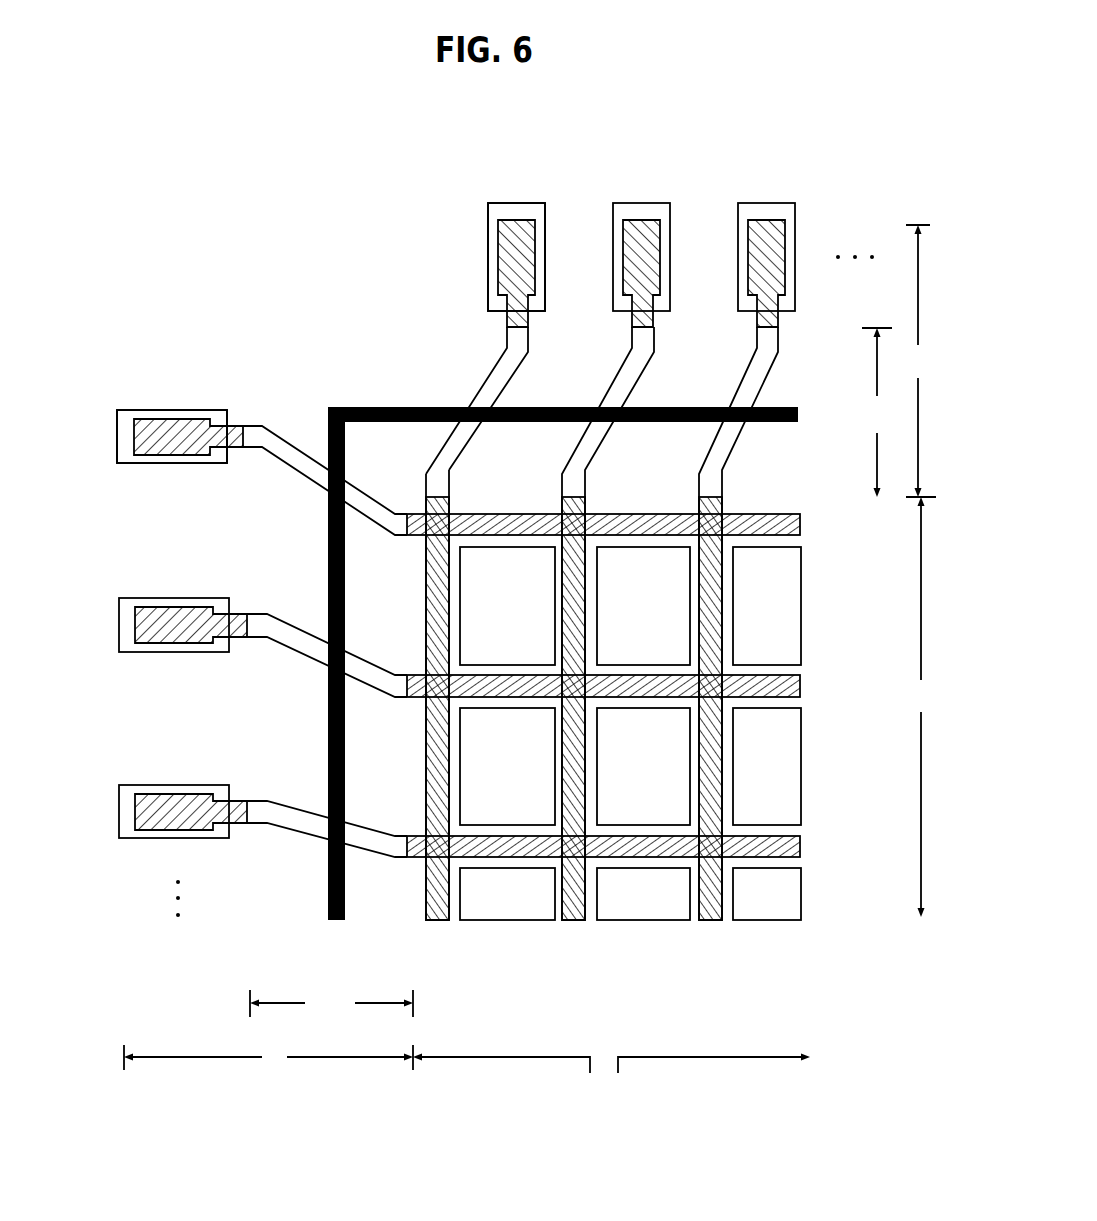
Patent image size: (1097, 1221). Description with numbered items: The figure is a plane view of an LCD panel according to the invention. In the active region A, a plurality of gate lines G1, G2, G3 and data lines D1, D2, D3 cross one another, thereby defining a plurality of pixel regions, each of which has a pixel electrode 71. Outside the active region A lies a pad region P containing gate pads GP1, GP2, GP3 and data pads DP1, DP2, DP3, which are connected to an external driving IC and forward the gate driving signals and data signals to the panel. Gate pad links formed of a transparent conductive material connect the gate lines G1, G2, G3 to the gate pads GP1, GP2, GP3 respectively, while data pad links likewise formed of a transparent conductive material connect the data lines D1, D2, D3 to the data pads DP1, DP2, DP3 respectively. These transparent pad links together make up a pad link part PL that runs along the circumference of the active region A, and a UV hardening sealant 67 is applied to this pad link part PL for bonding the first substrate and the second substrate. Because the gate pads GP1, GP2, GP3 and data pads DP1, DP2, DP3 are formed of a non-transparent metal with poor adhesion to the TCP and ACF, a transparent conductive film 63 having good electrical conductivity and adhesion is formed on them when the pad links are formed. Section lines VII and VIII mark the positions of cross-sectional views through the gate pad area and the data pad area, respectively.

The transparent conductive film 63 is at (490, 243).
The UV hardening sealant 67 is at (798, 414).
The pixel electrode 71 is at (675, 770).
The data pad DP1 is at (520, 222).
The data pad DP2 is at (645, 222).
The data pad DP3 is at (770, 224).
The gate pad GP1 is at (162, 424).
The gate pad GP2 is at (166, 612).
The gate pad GP3 is at (168, 799).
The pad link part PL is at (572, 673).
The gate line G1 is at (760, 520).
The gate line G2 is at (802, 686).
The gate line G3 is at (802, 847).
The data line D1 is at (450, 633).
The data line D2 is at (578, 912).
The data line D3 is at (715, 912).
The pad region P is at (530, 649).
The active region A is at (671, 785).
The section line VII- VII is at (103, 437).
The section line VIII- VIII is at (515, 150).